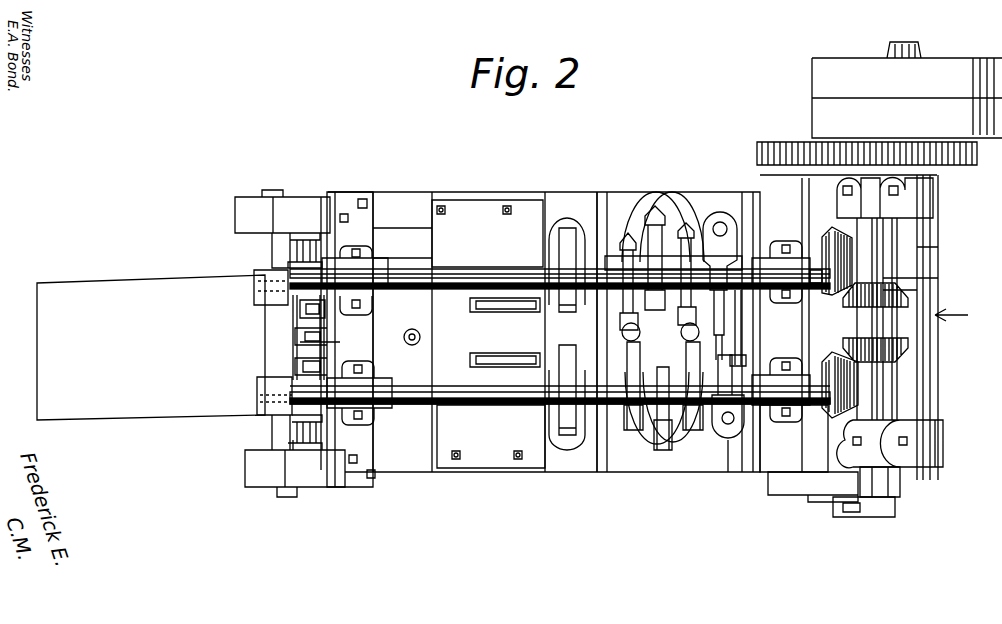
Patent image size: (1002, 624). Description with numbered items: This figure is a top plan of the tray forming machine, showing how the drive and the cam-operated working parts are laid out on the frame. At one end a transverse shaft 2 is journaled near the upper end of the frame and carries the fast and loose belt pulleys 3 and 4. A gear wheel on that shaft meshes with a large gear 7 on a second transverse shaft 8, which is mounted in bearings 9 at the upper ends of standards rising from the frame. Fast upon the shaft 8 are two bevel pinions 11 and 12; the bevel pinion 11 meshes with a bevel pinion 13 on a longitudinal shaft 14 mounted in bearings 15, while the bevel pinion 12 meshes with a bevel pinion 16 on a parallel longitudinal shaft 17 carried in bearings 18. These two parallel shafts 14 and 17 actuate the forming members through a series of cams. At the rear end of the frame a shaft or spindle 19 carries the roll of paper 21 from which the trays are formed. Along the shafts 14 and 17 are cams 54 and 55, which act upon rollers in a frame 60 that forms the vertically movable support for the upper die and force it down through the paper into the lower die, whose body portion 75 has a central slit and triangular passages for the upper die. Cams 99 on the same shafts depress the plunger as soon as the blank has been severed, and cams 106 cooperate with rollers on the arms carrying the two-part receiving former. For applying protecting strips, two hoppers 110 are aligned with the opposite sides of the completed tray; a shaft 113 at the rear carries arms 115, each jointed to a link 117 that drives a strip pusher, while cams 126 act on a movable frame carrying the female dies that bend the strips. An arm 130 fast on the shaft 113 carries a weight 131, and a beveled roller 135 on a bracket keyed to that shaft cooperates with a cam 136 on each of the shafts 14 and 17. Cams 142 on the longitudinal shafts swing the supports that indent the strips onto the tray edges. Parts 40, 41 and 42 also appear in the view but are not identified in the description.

The transverse shaft 2 is at (920, 378).
The fast belt pulley 3 is at (907, 118).
The loose belt pulley 4 is at (907, 70).
The large gear 7 is at (867, 166).
The transverse shaft 8 is at (870, 241).
The bearings 9 is at (890, 323).
The bevel pinion 11 is at (908, 290).
The bevel pinion 12 is at (908, 336).
The bevel pinion 13 is at (830, 240).
The longitudinal shaft 14 is at (500, 267).
The bearings 15 is at (781, 272).
The bevel pinion 16 is at (832, 404).
The longitudinal shaft 17 is at (507, 392).
The bearings 18 is at (568, 391).
The shaft or spindle 19 is at (275, 248).
The roll of paper 21 is at (151, 347).
The pin 40 is at (855, 510).
The slide block 41 is at (853, 508).
The arm 42 is at (788, 485).
The cam 54 is at (722, 258).
The cam 55 is at (745, 360).
The frame 60 is at (718, 222).
The body portion of lower die 75 is at (742, 322).
The cams 99 is at (640, 210).
The cams 106 is at (612, 462).
The hoppers 110 is at (508, 354).
The shaft 113 is at (308, 427).
The arms 115 is at (321, 248).
The link 117 is at (400, 310).
The cams 126 is at (574, 311).
The arm 130 is at (341, 341).
The weight 131 is at (420, 337).
The beveled roller 135 is at (296, 308).
The cam 136 is at (255, 290).
The cams 142 is at (655, 370).